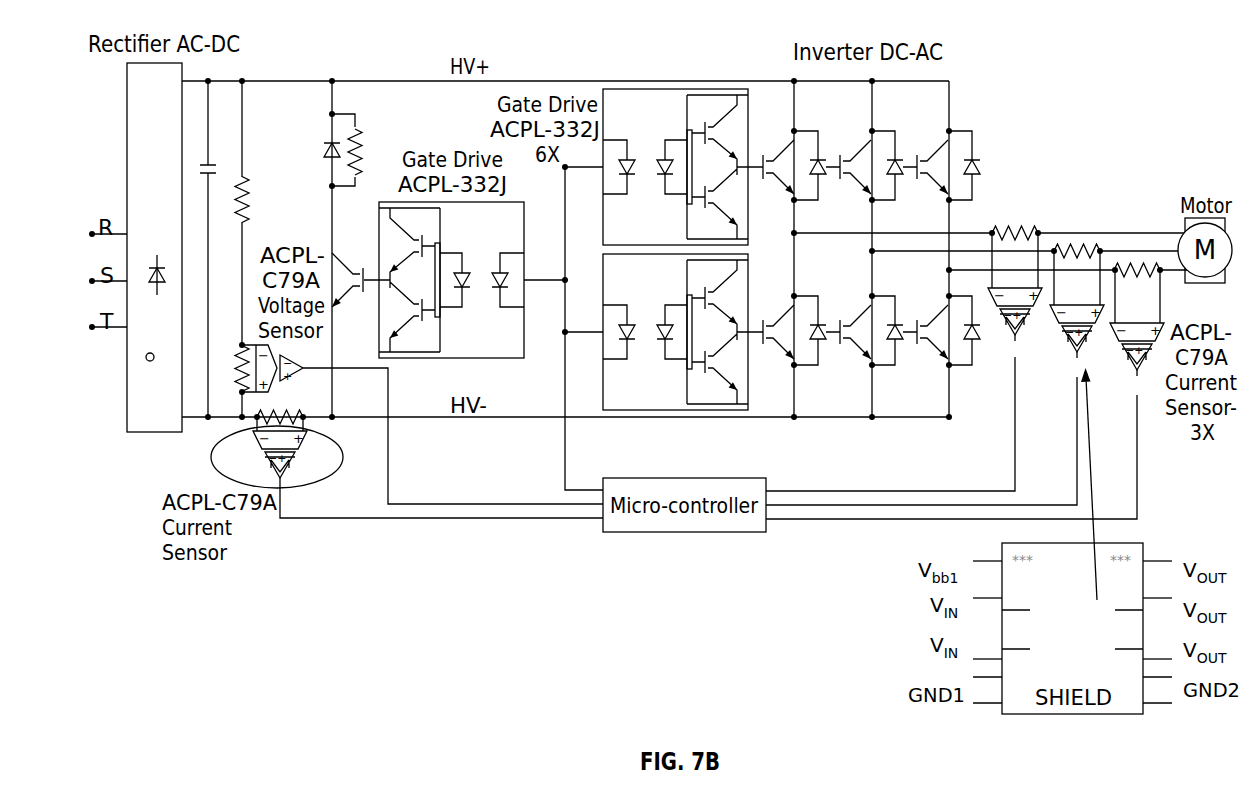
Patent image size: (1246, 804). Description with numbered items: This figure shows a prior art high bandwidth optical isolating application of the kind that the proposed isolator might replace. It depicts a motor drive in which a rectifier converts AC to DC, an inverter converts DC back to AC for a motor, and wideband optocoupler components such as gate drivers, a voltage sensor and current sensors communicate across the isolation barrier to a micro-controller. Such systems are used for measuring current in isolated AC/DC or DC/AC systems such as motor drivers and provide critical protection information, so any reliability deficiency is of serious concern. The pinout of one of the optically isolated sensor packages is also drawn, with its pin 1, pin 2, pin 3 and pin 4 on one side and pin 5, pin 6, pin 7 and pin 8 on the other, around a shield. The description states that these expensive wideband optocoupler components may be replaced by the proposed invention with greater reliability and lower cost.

The pin 1 (Vbb1) 1 is at (987, 573).
The pin 2 (VIN) 2 is at (987, 610).
The pin 3 (VIN) 3 is at (987, 648).
The pin 4 (GND1) 4 is at (987, 690).
The pin 5 (GND2) 5 is at (1157, 690).
The pin 6 (VOUT) 6 is at (1157, 648).
The pin 7 (VOUT) 7 is at (1157, 610).
The pin 8 (VOUT) 8 is at (1157, 573).